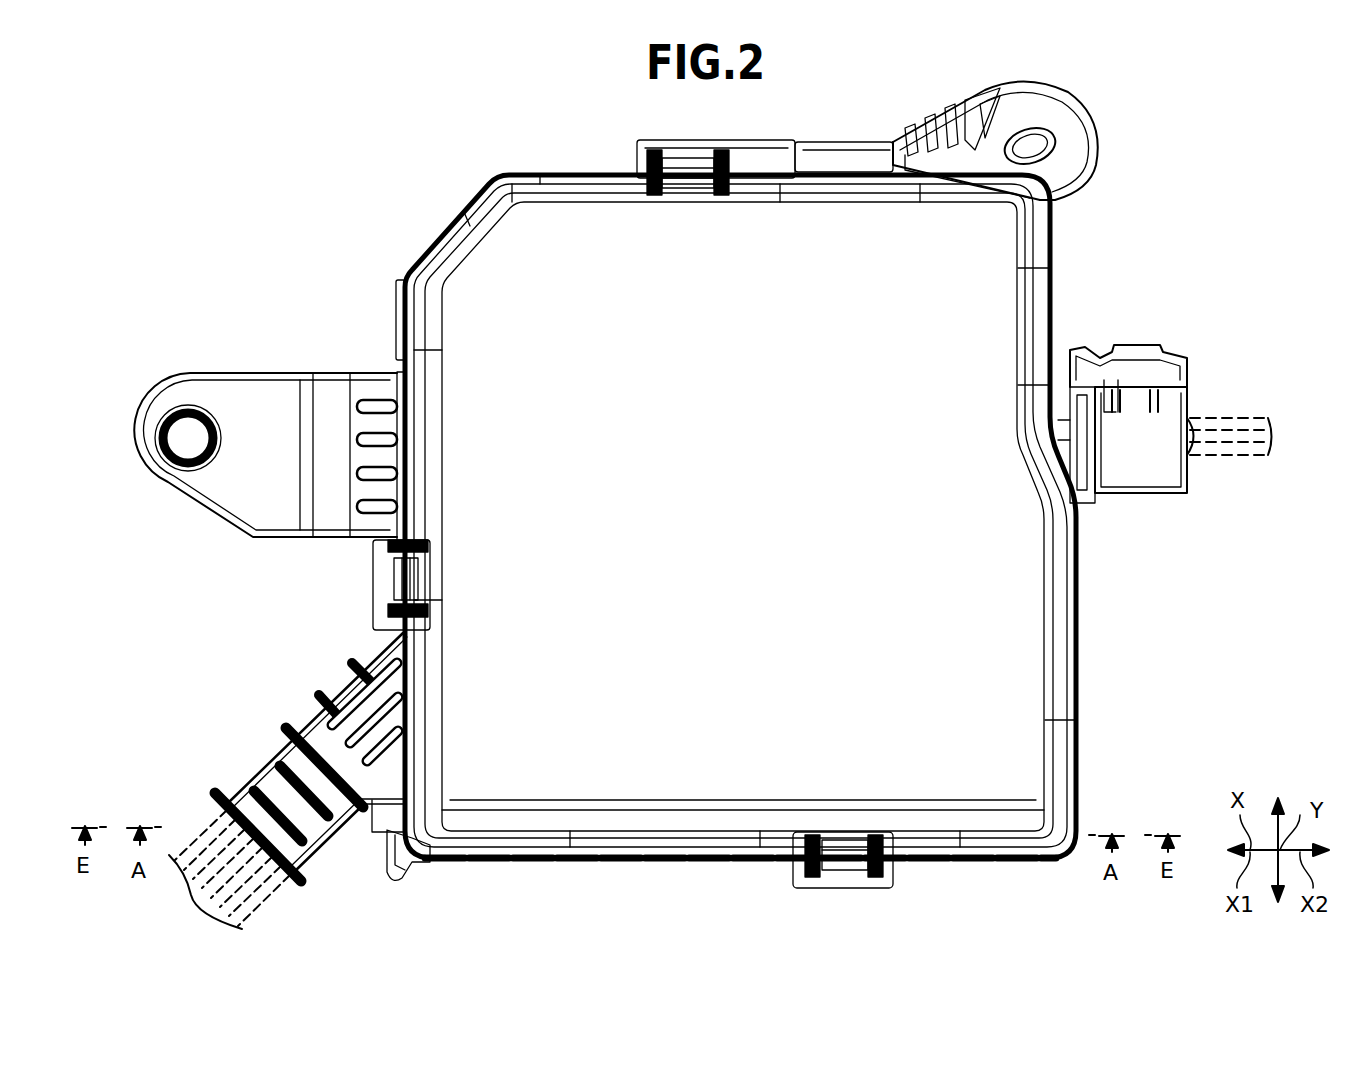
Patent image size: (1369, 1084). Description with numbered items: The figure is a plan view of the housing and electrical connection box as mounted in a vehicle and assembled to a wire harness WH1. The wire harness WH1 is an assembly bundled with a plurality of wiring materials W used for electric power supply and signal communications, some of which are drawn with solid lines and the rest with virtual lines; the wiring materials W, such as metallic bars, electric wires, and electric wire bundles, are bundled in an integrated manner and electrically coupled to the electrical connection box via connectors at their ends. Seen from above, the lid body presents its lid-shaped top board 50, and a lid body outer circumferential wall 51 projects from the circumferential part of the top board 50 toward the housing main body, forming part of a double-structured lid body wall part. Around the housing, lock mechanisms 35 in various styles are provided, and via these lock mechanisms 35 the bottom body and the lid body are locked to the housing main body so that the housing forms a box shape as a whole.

The lock mechanisms 35 is at (688, 148).
The top board 50 is at (905, 304).
The lid body outer circumferential wall 51 is at (1078, 660).
The wire harness WH1 is at (1100, 214).
The wiring materials W is at (1228, 410).